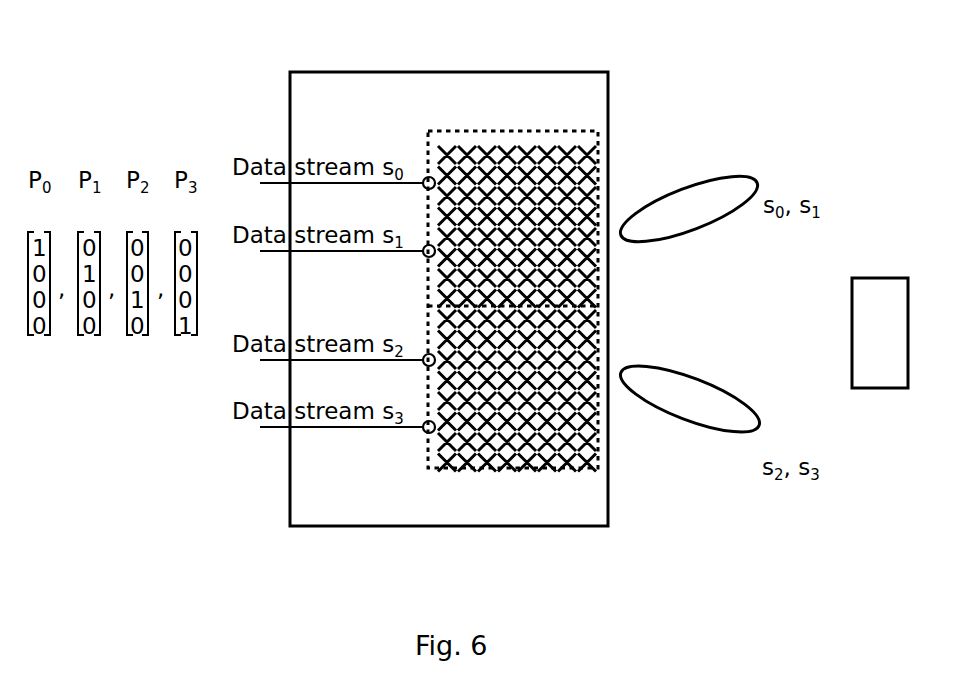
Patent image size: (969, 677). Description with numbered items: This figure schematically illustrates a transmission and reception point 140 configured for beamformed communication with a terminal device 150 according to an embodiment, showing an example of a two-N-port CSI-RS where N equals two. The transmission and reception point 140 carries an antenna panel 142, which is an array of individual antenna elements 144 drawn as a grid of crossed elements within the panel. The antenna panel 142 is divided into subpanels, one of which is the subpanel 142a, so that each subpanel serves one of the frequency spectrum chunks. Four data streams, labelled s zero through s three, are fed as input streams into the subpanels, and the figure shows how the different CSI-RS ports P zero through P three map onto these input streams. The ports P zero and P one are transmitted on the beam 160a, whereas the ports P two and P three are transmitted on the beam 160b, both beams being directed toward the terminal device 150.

The transmission and reception point 140 is at (424, 80).
The subpanel 142a is at (490, 131).
The antenna panel 142 is at (599, 447).
The antenna element 144 is at (584, 437).
The terminal device 150 is at (865, 278).
The beam 160a is at (756, 180).
The beam 160b is at (735, 387).